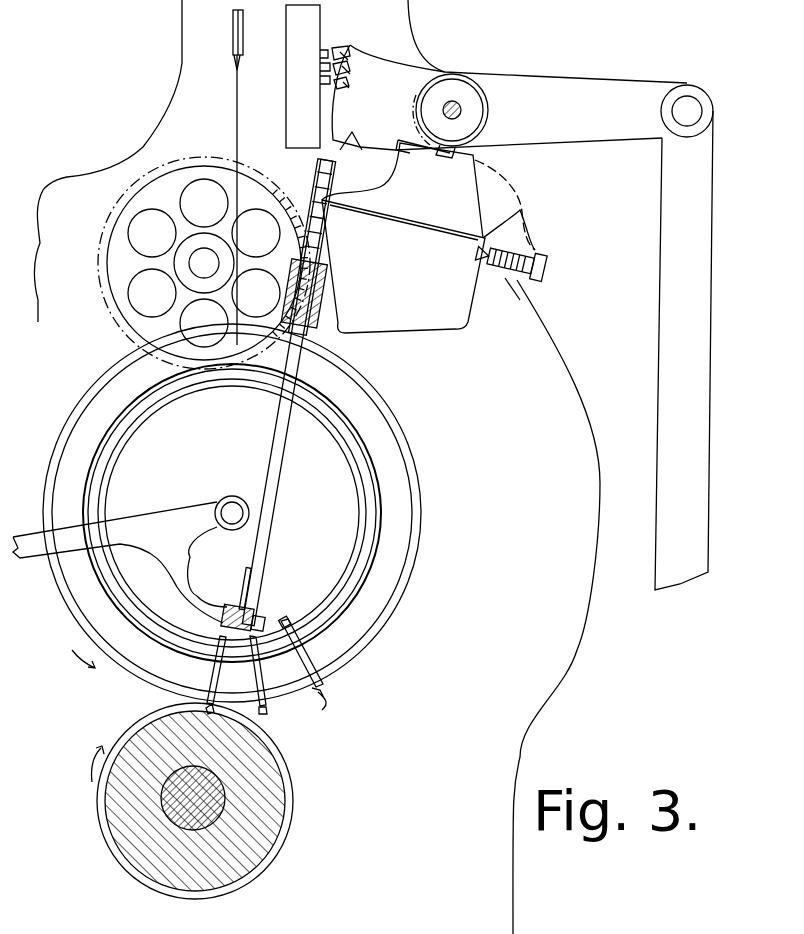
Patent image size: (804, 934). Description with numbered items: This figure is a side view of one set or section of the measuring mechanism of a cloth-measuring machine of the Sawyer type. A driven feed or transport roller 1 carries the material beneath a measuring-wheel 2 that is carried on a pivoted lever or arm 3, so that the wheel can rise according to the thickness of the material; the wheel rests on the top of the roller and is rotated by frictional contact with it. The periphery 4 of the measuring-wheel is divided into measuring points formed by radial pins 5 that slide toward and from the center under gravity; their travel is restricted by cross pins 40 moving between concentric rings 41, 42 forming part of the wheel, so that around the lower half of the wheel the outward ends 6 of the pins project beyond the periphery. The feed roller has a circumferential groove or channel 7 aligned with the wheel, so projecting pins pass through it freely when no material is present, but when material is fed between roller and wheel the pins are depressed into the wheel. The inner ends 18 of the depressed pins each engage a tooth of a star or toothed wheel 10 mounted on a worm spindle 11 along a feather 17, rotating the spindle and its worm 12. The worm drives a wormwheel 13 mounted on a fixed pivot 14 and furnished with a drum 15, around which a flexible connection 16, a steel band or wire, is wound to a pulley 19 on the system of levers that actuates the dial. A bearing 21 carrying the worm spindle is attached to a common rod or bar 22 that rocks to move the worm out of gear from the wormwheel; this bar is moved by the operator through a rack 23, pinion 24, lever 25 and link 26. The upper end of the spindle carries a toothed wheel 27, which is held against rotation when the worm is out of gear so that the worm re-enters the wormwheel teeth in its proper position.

The feed or transport roller 1 is at (275, 810).
The measuring-wheel 2 is at (388, 585).
The pivoted lever or arm 3 is at (131, 559).
The periphery 4 is at (350, 656).
The pin 5 is at (258, 680).
The outward end 6 is at (318, 695).
The circumferential groove or channel 7 is at (255, 866).
The star or toothed wheel 10 is at (222, 622).
The worm spindle 11 is at (272, 502).
The worm 12 is at (318, 312).
The wormwheel 13 is at (282, 313).
The fixed pivot 14 is at (204, 263).
The drum 15 is at (204, 225).
The flexible connection 16 is at (237, 115).
The feather 17 is at (247, 596).
The inner end 18 is at (262, 636).
The pulley 19 is at (233, 30).
The bearing 21 is at (330, 190).
The common rod or bar 22 is at (434, 238).
The rack 23 is at (430, 143).
The pinion 24 is at (412, 104).
The lever 25 is at (509, 97).
The link 26 is at (684, 337).
The toothed wheel 27 is at (320, 143).
The cross pin 40 is at (290, 627).
The concentric ring 41 is at (236, 513).
The concentric ring 42 is at (232, 513).